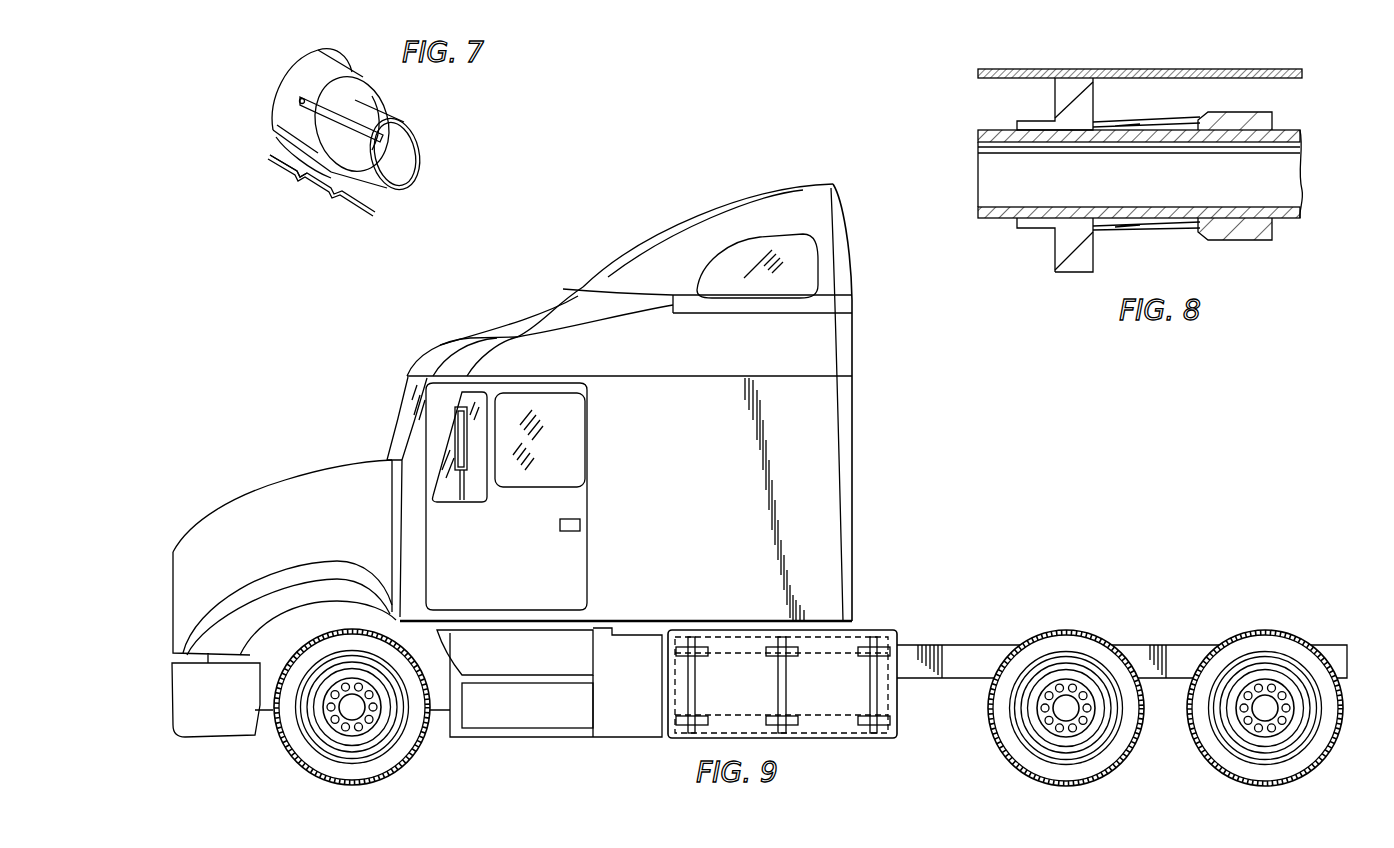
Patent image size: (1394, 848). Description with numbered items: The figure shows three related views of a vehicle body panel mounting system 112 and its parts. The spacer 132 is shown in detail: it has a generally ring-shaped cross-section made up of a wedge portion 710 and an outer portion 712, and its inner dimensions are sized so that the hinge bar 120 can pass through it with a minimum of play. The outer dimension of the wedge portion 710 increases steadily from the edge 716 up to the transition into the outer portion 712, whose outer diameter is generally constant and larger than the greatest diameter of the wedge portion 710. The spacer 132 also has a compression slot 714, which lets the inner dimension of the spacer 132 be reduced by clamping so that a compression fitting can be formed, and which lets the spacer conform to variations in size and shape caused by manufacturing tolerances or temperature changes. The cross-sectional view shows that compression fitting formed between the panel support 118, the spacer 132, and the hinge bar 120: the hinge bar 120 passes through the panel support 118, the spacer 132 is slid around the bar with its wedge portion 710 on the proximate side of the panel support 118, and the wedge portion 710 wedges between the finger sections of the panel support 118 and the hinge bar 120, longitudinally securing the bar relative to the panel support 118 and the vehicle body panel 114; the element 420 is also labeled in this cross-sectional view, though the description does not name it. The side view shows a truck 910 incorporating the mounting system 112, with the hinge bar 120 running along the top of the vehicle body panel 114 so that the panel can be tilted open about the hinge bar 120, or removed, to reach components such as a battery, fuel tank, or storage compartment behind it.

In FIG. 9, the vehicle body panel mounting system 112 is at (878, 606).
In FIG. 8, the vehicle body panel 114 is at (1236, 68).
In FIG. 8, the panel support 118 is at (1055, 96).
In FIG. 8, the hinge bar 120 is at (1292, 140).
In FIG. 7, the spacer 132 is at (254, 138).
In FIG. 8, the spacer 132 is at (1262, 106).
In FIG. 8, the wedge 420 is at (1126, 122).
In FIG. 7, the wedge portion 710 is at (321, 195).
In FIG. 7, the outer portion 712 is at (284, 180).
In FIG. 7, the compression slot 714 is at (300, 99).
In FIG. 7, the edge 716 is at (428, 149).
In FIG. 9, the truck 910 is at (336, 380).